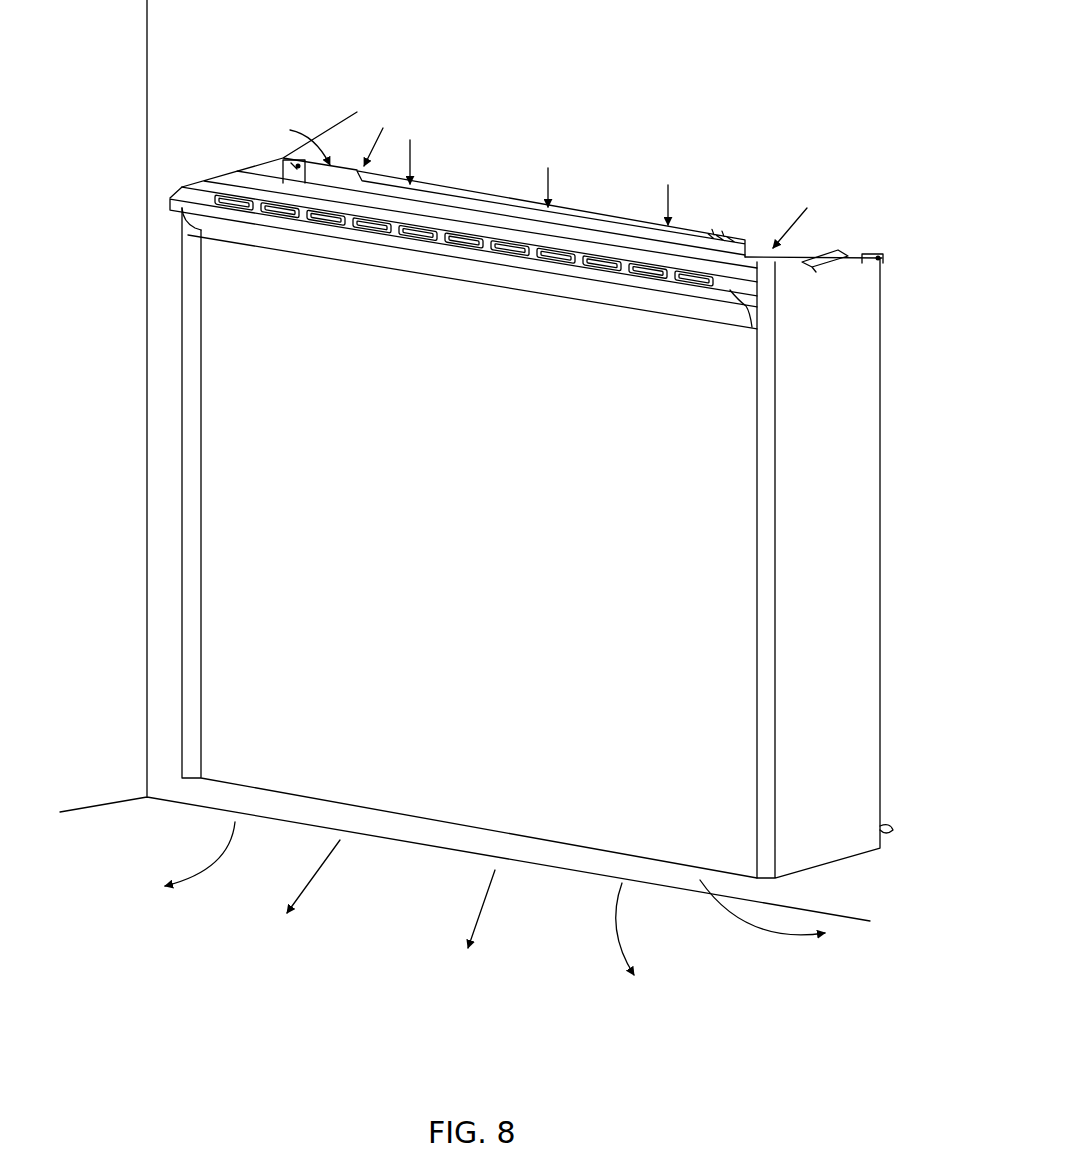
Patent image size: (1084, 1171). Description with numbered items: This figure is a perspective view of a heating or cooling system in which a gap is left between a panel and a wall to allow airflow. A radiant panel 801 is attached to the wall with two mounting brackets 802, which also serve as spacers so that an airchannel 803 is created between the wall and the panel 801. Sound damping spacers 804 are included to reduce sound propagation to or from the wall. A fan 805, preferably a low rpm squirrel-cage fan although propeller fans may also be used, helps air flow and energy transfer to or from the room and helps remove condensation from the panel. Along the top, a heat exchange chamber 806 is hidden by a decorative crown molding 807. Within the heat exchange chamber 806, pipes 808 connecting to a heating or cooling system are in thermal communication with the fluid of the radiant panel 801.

The radiant panel 801 is at (245, 466).
The mounting brackets 802 is at (284, 162).
The airchannel 803 is at (338, 140).
The sound damping spacers 804 is at (285, 155).
The fan 805 is at (470, 184).
The heat exchange chamber 806 is at (203, 182).
The decorative crown molding 807 is at (173, 207).
The pipes 808 is at (800, 272).